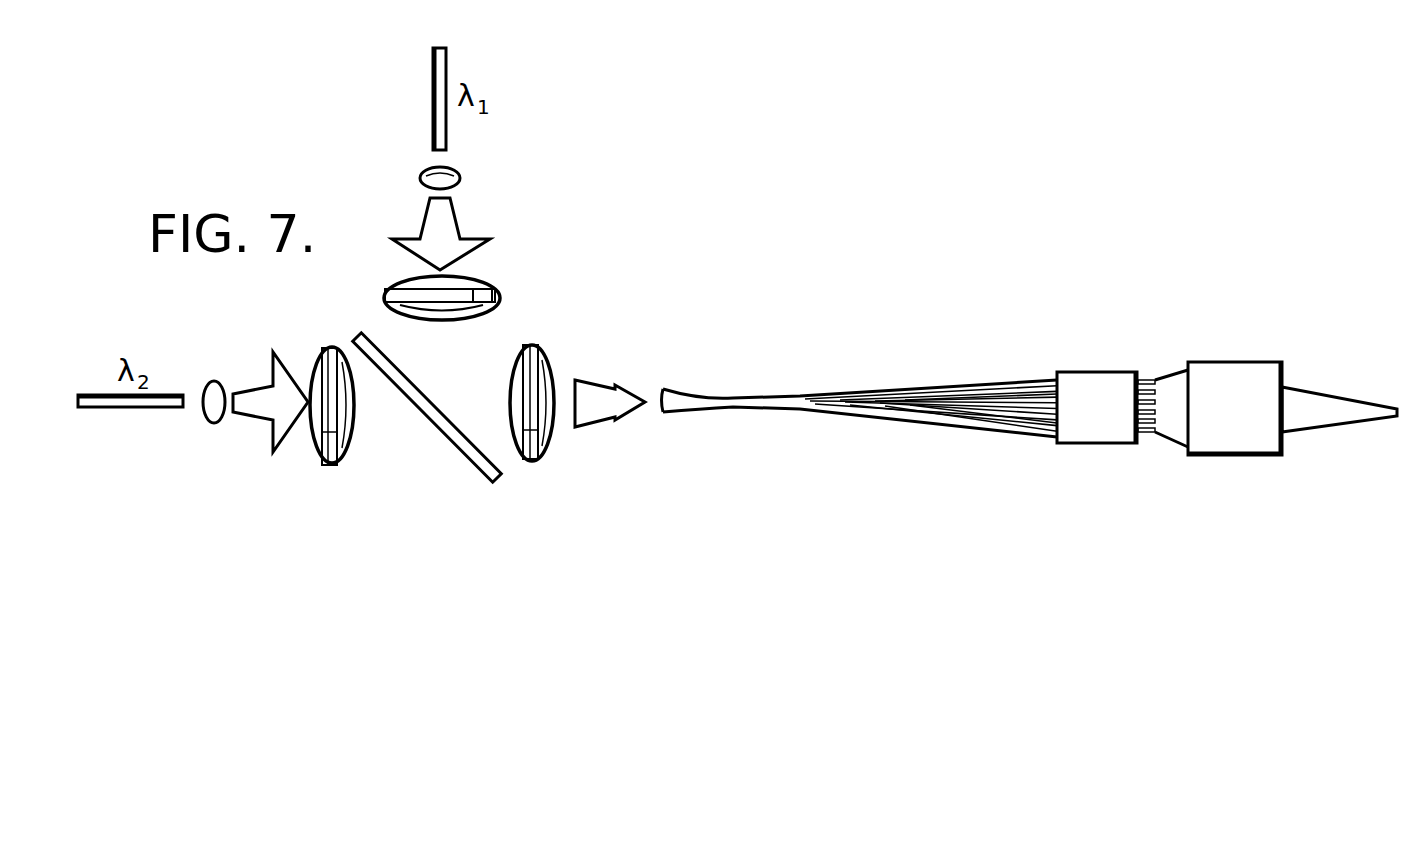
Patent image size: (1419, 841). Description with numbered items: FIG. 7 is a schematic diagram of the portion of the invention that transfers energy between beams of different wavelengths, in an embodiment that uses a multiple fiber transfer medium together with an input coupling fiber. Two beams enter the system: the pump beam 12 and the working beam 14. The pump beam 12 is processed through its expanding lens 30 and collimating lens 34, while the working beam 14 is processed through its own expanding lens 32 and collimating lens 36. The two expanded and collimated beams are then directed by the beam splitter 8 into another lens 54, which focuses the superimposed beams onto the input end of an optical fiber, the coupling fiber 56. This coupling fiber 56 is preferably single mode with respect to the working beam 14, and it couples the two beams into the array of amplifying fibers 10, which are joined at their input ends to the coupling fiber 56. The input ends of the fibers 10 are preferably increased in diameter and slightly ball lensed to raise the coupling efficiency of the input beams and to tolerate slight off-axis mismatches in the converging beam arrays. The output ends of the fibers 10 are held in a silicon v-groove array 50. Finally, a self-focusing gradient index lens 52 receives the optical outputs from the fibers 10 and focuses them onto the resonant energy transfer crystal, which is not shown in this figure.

The beam splitter 8 is at (465, 447).
The fibers 10 is at (937, 379).
The pump beam 12 is at (433, 99).
The working beam 14 is at (163, 408).
The expanding lens 30 is at (420, 183).
The expanding lens 32 is at (217, 421).
The collimating lens 34 is at (500, 287).
The collimating lens 36 is at (350, 447).
The silicon v-groove array 50 is at (1098, 385).
The self-focusing gradient index lens 52 is at (1208, 380).
The lens 54 is at (548, 445).
The coupling fiber 56 is at (698, 408).